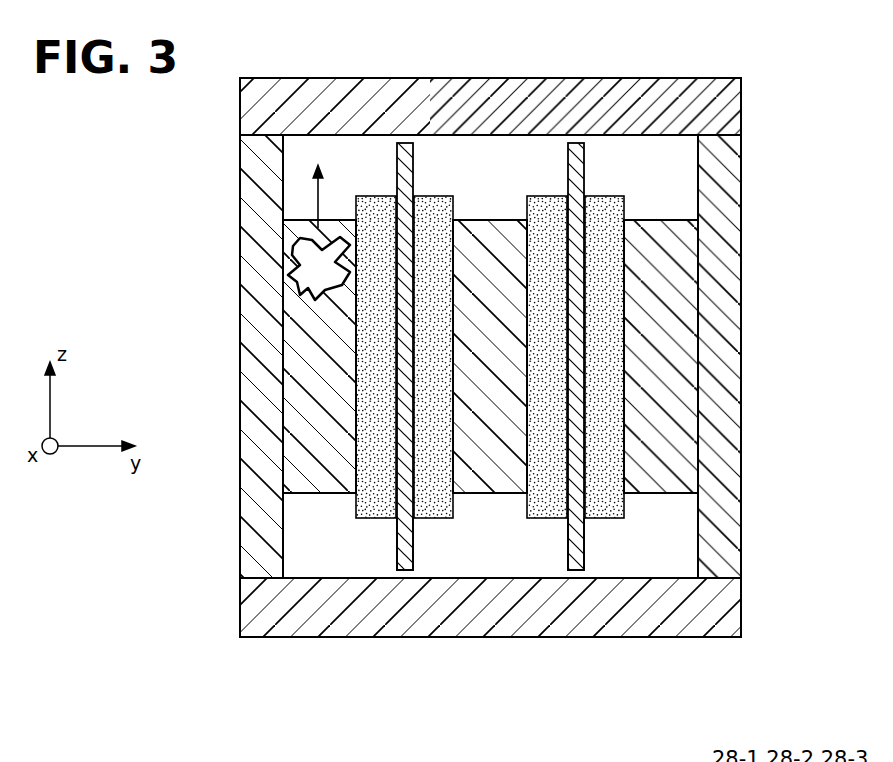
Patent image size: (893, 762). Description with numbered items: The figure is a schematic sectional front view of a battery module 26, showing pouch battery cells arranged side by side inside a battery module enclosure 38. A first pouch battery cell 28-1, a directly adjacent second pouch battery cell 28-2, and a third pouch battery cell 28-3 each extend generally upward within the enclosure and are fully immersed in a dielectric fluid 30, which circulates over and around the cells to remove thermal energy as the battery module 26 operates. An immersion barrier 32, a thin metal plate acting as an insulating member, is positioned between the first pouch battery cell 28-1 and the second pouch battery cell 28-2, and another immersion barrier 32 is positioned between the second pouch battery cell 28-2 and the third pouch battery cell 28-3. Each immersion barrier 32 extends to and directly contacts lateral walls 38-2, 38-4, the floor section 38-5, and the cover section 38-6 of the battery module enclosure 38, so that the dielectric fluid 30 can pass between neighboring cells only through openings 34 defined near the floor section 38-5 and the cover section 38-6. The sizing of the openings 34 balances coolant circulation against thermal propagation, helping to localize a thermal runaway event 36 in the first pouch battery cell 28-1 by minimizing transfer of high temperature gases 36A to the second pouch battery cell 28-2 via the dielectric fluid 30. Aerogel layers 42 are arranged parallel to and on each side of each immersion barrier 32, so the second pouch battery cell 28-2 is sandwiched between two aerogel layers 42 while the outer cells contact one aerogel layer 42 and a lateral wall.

The battery module 26 is at (227, 688).
The first pouch battery cell 28-1 is at (327, 485).
The second pouch battery cell 28-2 is at (498, 485).
The third pouch battery cell 28-3 is at (663, 485).
The dielectric fluid 30 is at (302, 138).
The immersion barrier 32 is at (410, 547).
The opening 34 is at (403, 134).
The thermal runaway event 36 is at (294, 242).
The high temperature gases 36A is at (314, 188).
The battery module enclosure 38 is at (755, 160).
The lateral wall 38-2 is at (250, 190).
The lateral wall 38-4 is at (722, 325).
The floor section 38-5 is at (712, 613).
The cover section 38-6 is at (497, 100).
The aerogel layer 42 is at (377, 207).